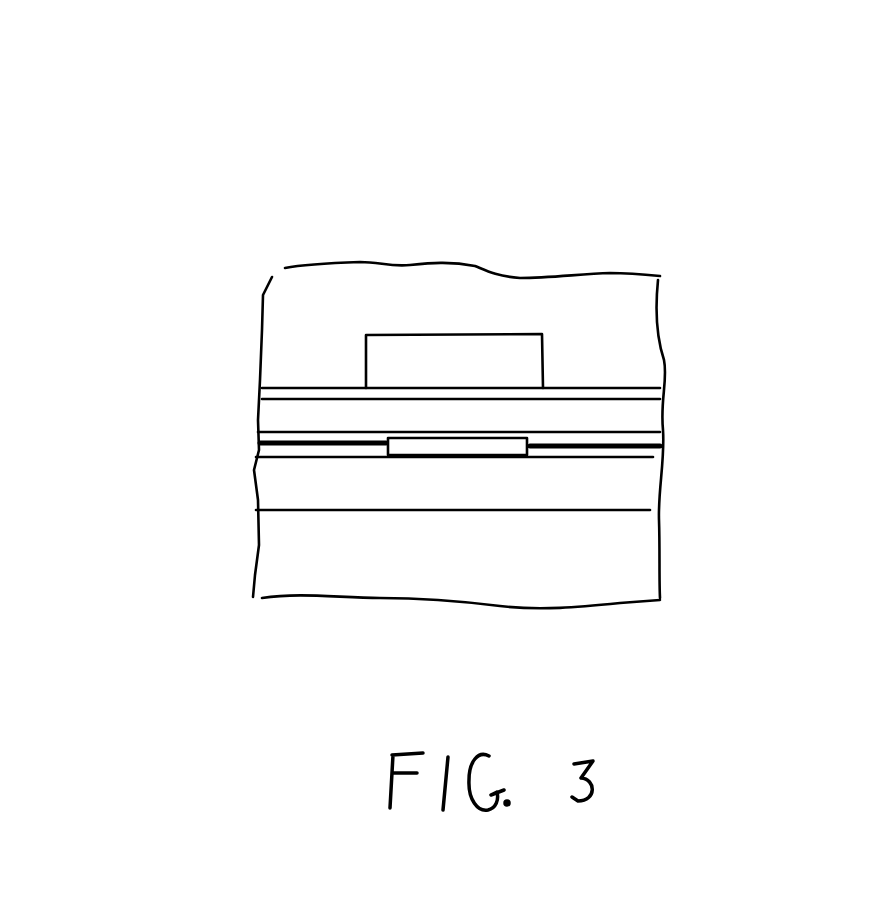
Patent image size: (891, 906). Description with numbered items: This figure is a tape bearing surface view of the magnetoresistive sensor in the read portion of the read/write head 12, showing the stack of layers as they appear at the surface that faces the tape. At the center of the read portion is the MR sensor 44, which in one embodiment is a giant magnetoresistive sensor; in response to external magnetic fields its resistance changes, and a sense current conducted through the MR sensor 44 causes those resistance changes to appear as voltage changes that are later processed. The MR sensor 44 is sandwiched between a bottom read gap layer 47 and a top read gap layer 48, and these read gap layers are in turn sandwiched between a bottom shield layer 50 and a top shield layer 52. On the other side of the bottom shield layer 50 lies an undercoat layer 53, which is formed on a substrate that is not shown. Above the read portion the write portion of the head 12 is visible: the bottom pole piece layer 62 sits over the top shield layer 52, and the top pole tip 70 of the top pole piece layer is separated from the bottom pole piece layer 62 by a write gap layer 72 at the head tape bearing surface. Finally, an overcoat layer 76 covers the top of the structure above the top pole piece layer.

The head 12 is at (823, 85).
The MR sensor 44 is at (477, 457).
The bottom read gap layer 47 is at (268, 460).
The top read gap layer 48 is at (661, 433).
The bottom shield layer 50 is at (661, 490).
The top shield layer 52 is at (260, 422).
The undercoat layer 53 is at (661, 572).
The bottom pole piece layer 62 is at (391, 433).
The top pole tip 70 is at (543, 363).
The write gap layer 72 is at (660, 388).
The overcoat layer 76 is at (262, 300).